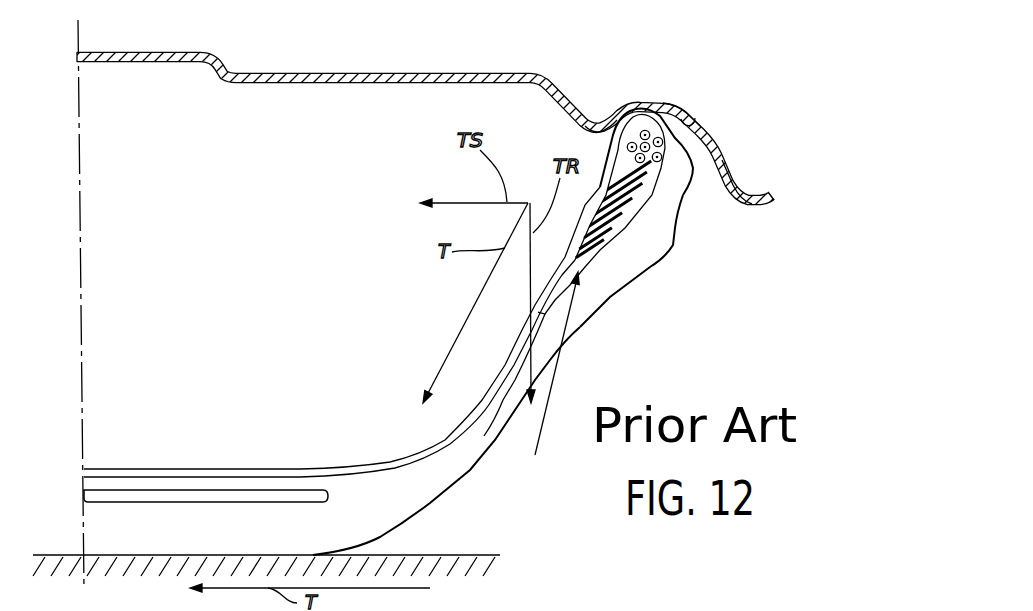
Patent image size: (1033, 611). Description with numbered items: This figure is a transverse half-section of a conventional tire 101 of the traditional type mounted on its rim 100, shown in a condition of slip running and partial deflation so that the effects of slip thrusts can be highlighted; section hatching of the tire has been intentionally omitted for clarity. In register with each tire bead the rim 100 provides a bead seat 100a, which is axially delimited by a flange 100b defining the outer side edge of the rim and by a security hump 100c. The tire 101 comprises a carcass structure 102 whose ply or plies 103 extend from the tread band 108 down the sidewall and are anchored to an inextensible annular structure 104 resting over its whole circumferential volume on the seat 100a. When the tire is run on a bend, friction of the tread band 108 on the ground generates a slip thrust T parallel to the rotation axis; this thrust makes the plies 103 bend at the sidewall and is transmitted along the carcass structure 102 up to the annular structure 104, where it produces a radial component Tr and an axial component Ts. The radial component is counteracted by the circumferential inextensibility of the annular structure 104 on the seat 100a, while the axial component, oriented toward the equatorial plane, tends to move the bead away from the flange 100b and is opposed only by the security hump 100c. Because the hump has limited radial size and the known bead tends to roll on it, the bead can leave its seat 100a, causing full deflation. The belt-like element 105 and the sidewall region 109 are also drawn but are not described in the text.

The rim 100 is at (478, 68).
The bead seat 100a is at (693, 118).
The flange 100b is at (738, 186).
The security hump 100c is at (597, 130).
The tire 101 is at (718, 300).
The carcass structure 102 is at (488, 418).
The carcass ply 103 is at (388, 458).
The inextensible annular structure 104 is at (664, 193).
The belt 105 is at (248, 486).
The tread band 108 is at (430, 503).
The bead portion 109 is at (648, 268).